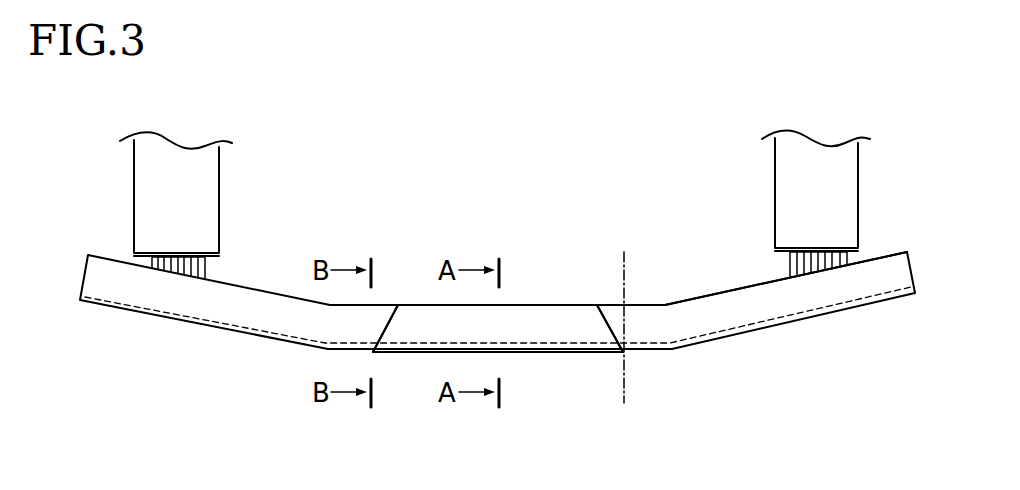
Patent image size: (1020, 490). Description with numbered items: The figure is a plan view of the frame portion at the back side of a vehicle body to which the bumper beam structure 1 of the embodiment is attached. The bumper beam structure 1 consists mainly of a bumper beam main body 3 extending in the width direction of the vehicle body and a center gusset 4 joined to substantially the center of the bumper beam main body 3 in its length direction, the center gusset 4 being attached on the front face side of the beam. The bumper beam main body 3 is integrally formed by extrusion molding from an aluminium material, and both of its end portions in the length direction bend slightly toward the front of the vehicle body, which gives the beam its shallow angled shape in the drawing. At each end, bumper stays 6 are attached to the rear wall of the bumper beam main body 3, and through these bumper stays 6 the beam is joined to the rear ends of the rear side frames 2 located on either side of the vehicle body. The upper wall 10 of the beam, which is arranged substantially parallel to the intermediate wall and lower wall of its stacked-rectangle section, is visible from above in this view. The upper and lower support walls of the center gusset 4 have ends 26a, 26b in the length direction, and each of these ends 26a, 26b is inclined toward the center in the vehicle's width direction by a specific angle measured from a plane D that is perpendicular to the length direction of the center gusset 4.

The bumper beam structure 1 is at (656, 364).
The rear side frames 2 is at (148, 198).
The bumper beam main body 3 is at (857, 310).
The center gusset 4 is at (560, 353).
The bumper stays 6 is at (207, 267).
The upper wall 10 is at (763, 303).
The end of support wall 26a is at (383, 328).
The end of support wall 26b is at (613, 328).
The plane D is at (626, 265).